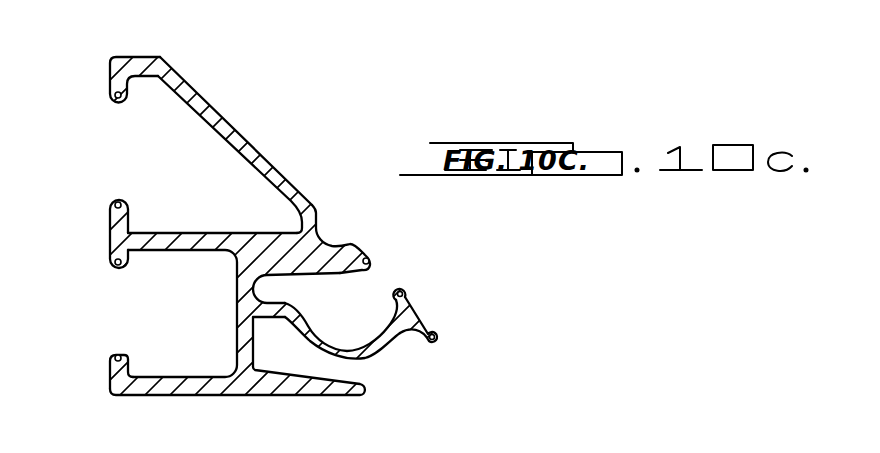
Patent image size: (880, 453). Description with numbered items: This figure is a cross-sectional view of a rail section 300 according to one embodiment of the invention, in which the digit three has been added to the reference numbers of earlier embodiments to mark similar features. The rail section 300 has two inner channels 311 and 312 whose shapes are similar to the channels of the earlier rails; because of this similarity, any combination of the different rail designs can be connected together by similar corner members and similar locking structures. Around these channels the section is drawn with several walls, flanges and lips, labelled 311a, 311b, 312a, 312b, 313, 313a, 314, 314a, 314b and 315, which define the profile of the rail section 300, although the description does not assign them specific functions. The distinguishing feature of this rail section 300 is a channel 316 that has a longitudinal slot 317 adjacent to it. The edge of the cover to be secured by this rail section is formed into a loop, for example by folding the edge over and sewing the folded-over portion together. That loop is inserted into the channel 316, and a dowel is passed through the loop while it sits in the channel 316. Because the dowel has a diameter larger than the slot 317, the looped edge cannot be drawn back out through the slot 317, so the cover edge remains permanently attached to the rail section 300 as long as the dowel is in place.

The rail section 300 is at (313, 81).
The inner channel 311 is at (157, 143).
The upper flange 311a is at (113, 96).
The intermediate flange 311b is at (108, 202).
The inner channel 312 is at (158, 301).
The intermediate flange rib 312a is at (110, 258).
The lower flange 312b is at (112, 358).
The recess 313 is at (300, 366).
The lip 313a is at (437, 336).
The base wall 314 is at (138, 400).
The projection 314a is at (369, 255).
The hook 314b is at (406, 296).
The inclined wall 315 is at (241, 131).
The channel 316 is at (360, 308).
The longitudinal slot 317 is at (378, 268).